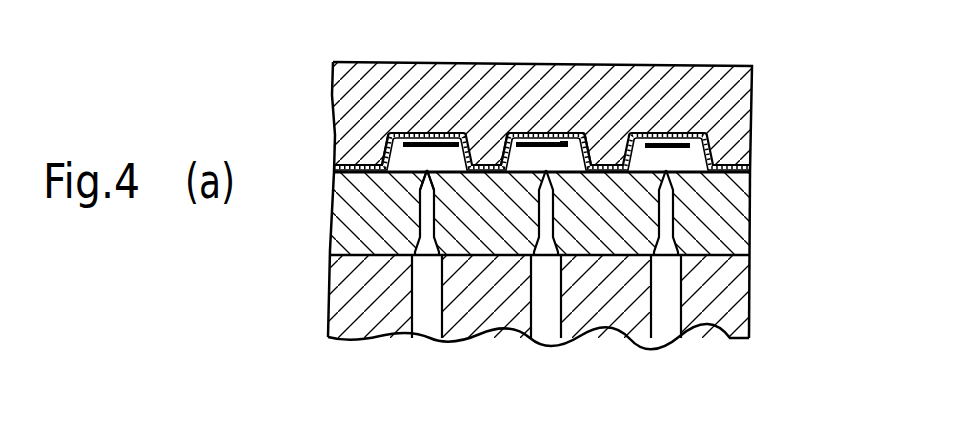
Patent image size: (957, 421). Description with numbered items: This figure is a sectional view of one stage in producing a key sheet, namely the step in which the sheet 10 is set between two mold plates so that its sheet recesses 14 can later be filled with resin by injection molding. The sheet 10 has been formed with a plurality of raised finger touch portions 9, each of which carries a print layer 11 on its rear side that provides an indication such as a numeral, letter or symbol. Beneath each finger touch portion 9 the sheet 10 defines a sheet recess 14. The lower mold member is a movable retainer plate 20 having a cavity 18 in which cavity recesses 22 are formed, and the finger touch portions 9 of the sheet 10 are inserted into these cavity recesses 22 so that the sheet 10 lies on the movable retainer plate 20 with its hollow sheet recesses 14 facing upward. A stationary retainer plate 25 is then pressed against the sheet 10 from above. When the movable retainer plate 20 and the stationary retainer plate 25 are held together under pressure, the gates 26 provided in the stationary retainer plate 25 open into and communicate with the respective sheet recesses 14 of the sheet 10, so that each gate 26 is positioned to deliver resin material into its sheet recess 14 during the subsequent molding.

The movable retainer plate 20 is at (702, 70).
The sheet 10 is at (345, 164).
The sheet recess 14 is at (386, 147).
The cavity 18 is at (420, 152).
The cavity recess 22 is at (521, 152).
The finger touch portion 9 is at (552, 137).
The print layer 11 is at (660, 150).
The gate 26 is at (662, 192).
The stationary retainer plate 25 is at (742, 228).